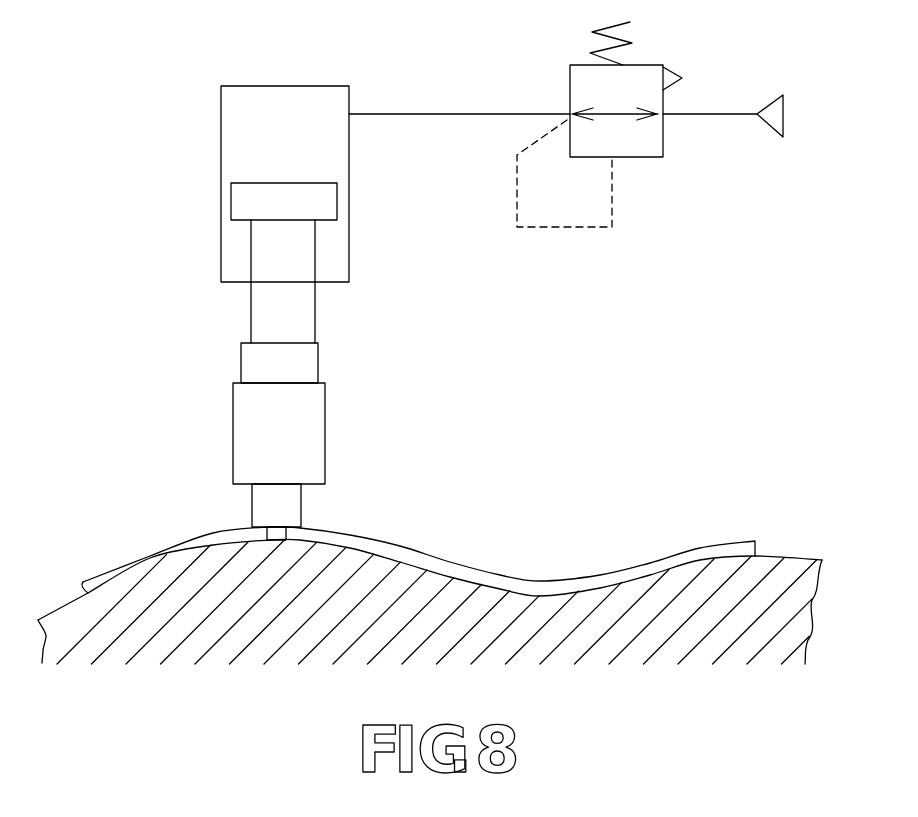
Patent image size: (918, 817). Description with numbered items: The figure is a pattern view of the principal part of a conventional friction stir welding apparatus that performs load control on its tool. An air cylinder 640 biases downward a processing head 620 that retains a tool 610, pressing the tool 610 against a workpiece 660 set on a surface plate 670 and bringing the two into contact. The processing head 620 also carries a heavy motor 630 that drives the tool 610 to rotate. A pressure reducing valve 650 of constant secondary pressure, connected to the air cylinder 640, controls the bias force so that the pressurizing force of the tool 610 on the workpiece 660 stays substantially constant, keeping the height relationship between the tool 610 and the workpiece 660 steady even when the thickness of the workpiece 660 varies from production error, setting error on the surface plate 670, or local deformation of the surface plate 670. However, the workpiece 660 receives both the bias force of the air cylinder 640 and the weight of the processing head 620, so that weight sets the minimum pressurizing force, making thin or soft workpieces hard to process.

The tool 610 is at (297, 502).
The processing head 620 is at (316, 430).
The motor 630 is at (315, 362).
The air cylinder 640 is at (349, 197).
The pressure reducing valve 650 is at (632, 148).
The workpiece 660 is at (645, 563).
The surface plate 670 is at (795, 558).